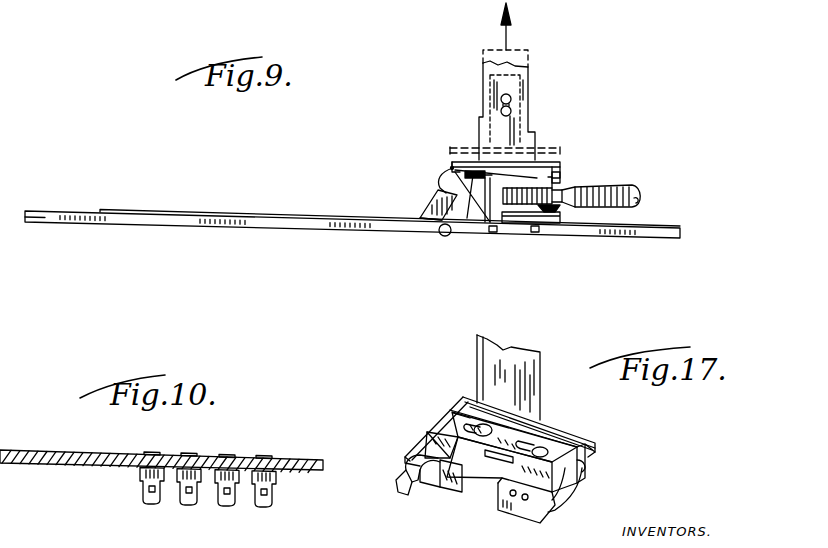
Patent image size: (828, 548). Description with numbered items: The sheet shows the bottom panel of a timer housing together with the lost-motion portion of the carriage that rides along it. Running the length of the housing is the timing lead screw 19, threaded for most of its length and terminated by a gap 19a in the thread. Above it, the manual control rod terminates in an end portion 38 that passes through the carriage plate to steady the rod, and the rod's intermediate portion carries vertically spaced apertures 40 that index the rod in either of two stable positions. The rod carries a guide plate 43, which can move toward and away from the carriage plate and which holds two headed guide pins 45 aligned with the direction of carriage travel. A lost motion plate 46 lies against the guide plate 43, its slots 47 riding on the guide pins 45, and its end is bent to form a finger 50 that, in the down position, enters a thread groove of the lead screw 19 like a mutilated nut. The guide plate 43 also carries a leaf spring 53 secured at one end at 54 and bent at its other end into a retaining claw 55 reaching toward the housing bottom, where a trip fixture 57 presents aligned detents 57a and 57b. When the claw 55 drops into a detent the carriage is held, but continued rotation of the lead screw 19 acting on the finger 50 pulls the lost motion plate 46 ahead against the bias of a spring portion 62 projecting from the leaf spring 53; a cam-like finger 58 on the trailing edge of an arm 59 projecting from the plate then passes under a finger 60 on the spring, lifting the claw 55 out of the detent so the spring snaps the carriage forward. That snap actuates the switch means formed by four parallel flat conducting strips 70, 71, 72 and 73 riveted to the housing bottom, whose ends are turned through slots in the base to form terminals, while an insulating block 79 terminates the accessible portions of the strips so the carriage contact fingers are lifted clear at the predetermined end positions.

In FIG. 9, the timing lead screw 19 is at (627, 192).
In FIG. 9, the gap in the thread 19a is at (555, 188).
In FIG. 9, the end portion of control rod 38 is at (536, 148).
In FIG. 17, the end portion of control rod 38 is at (543, 407).
In FIG. 9, the vertically spaced apertures 40 is at (512, 100).
In FIG. 9, the guide plate 43 is at (551, 160).
In FIG. 17, the guide plate 43 is at (443, 427).
In FIG. 9, the guide pins 45 is at (490, 222).
In FIG. 17, the guide pins 45 is at (485, 428).
In FIG. 17, the lost motion plate 46 is at (455, 417).
In FIG. 17, the slots 47 is at (524, 446).
In FIG. 9, the finger 50 is at (560, 208).
In FIG. 17, the finger 50 is at (583, 467).
In FIG. 17, the leaf spring 53 is at (422, 485).
In FIG. 17, the securing point of leaf spring 54 is at (507, 497).
In FIG. 9, the retaining finger (spring claw) 55 is at (428, 208).
In FIG. 17, the retaining finger (spring claw) 55 is at (393, 488).
In FIG. 9, the trip fixture 57 is at (425, 203).
In FIG. 9, the detent 57a is at (446, 188).
In FIG. 9, the detent 57b is at (445, 230).
In FIG. 9, the cam-like finger 58 is at (432, 148).
In FIG. 17, the cam-like finger 58 is at (423, 445).
In FIG. 9, the arm 59 is at (473, 180).
In FIG. 17, the arm 59 is at (425, 485).
In FIG. 9, the finger 60 is at (462, 225).
In FIG. 17, the finger 60 is at (512, 452).
In FIG. 9, the spring portion 62 is at (560, 170).
In FIG. 17, the spring portion 62 is at (562, 513).
In FIG. 9, the conducting strip 70 is at (190, 211).
In FIG. 10, the conducting strip 70 is at (153, 451).
In FIG. 10, the conducting strip 71 is at (191, 452).
In FIG. 10, the conducting strip 72 is at (229, 454).
In FIG. 10, the conducting strip 73 is at (266, 455).
In FIG. 9, the insulating block 79 is at (551, 223).